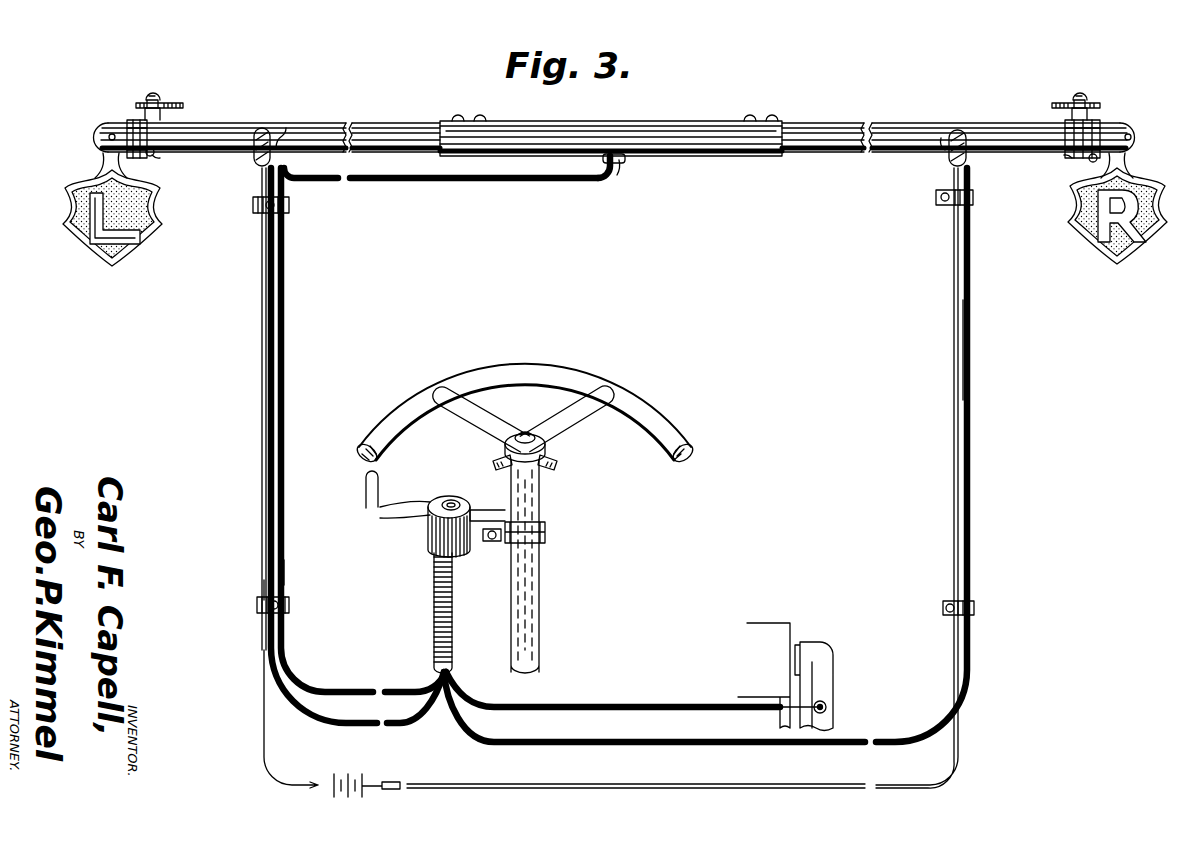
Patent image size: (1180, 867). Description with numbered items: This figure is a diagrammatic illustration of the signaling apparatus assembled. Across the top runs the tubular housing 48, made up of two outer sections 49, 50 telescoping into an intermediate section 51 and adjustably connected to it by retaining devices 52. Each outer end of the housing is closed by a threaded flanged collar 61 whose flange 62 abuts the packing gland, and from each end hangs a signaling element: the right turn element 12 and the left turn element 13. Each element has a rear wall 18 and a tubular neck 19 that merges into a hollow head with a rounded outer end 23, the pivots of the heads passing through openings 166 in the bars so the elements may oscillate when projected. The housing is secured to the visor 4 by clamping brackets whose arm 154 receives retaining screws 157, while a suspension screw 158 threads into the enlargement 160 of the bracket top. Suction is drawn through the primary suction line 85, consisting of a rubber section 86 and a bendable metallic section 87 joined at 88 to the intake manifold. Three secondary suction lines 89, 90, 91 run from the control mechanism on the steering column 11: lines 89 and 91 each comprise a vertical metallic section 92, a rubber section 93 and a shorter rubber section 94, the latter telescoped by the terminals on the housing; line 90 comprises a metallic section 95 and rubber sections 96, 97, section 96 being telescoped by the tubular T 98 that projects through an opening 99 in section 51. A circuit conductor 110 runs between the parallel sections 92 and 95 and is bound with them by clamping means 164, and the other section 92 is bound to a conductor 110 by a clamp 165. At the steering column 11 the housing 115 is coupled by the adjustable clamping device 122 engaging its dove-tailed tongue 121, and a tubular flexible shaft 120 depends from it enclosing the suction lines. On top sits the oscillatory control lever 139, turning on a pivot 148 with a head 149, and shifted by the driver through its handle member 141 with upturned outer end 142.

The visor 4 is at (184, 104).
The steering column 11 is at (540, 572).
The signaling element (right turn) 12 is at (1080, 237).
The signaling element (left turn) 13 is at (148, 237).
The rear wall 18 is at (110, 248).
The tubular neck 19 is at (103, 159).
The rounded outer end of head 23 is at (101, 135).
The tubular housing 48 is at (564, 117).
The outer section 49 is at (350, 115).
The outer section 50 is at (890, 123).
The intermediate section 51 is at (741, 155).
The retaining devices 52 is at (481, 118).
The flanged collar 61 is at (153, 156).
The flange of collar 62 is at (1091, 162).
The primary suction line 85 is at (704, 696).
The rubber tubing section of primary suction line 86 is at (598, 688).
The metallic tubing section of primary suction line 87 is at (804, 724).
The connection to intake manifold 88 is at (827, 707).
The secondary suction line 89 is at (254, 592).
The secondary suction line 90 is at (294, 576).
The secondary suction line 91 is at (977, 412).
The metallic tubing section 92 is at (259, 620).
The rubber tubing section 93 is at (386, 730).
The rubber tubing section 94 is at (256, 151).
The metallic tubing section 95 is at (286, 500).
The rubber tubing section 96 is at (484, 184).
The rubber tubing section 97 is at (374, 681).
The tubular T 98 is at (628, 170).
The opening in intermediate section 99 is at (625, 158).
The circuit conductor 110 is at (282, 425).
The housing 115 is at (431, 538).
The tubular flexible shaft 120 is at (434, 612).
The dove-tailed tongue 121 is at (491, 500).
The adjustable clamping device 122 is at (546, 531).
The oscillatory control lever 139 is at (438, 499).
The handle member 141 is at (396, 521).
The upturned outer end 142 is at (377, 486).
The pivot 148 is at (489, 545).
The head of pivot 149 is at (470, 484).
The bracket arm 154 is at (1092, 120).
The retaining screws 157 is at (160, 156).
The suspension screw 158 is at (158, 84).
The enlargement of bracket top 160 is at (135, 119).
The clamping means 164 is at (287, 211).
The clamp 165 is at (973, 197).
The openings 166 is at (110, 132).